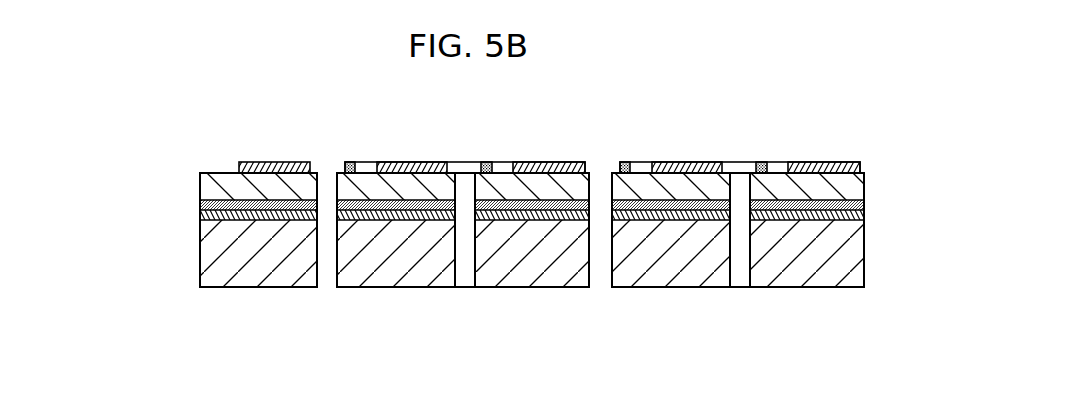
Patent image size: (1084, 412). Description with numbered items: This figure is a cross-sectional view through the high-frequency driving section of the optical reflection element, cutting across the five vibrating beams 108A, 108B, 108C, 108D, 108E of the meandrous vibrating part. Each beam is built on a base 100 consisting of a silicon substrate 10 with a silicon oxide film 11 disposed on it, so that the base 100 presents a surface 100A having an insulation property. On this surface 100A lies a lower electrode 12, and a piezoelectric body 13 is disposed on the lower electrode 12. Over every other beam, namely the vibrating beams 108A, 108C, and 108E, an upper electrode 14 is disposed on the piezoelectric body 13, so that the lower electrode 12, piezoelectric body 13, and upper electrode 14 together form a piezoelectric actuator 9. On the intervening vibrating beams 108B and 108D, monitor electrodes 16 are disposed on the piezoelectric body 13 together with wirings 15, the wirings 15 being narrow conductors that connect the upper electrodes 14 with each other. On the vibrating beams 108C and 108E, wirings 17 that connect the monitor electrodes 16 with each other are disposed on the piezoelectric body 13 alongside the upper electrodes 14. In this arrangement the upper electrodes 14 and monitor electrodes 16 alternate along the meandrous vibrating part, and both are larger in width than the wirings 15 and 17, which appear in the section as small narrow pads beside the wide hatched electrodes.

The actuator 9 is at (152, 138).
The silicon substrate 10 is at (220, 277).
The silicon oxide film 11 is at (212, 218).
The lower electrode 12 is at (210, 208).
The piezoelectric body 13 is at (215, 186).
The upper electrode 14 is at (240, 163).
The wiring 15 is at (350, 162).
The monitor electrode 16 is at (417, 162).
The wiring 17 is at (487, 162).
The base 100 is at (152, 233).
The surface 100A is at (280, 210).
The vibrating beam 108A is at (267, 277).
The vibrating beam 108B is at (401, 277).
The vibrating beam 108C is at (537, 277).
The vibrating beam 108D is at (672, 277).
The vibrating beam 108E is at (806, 277).